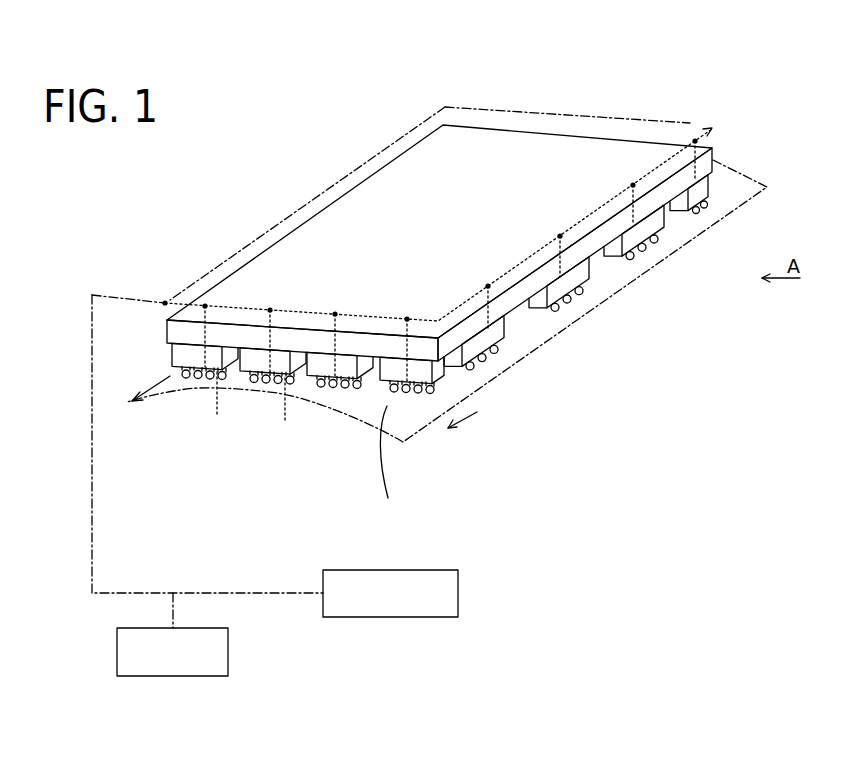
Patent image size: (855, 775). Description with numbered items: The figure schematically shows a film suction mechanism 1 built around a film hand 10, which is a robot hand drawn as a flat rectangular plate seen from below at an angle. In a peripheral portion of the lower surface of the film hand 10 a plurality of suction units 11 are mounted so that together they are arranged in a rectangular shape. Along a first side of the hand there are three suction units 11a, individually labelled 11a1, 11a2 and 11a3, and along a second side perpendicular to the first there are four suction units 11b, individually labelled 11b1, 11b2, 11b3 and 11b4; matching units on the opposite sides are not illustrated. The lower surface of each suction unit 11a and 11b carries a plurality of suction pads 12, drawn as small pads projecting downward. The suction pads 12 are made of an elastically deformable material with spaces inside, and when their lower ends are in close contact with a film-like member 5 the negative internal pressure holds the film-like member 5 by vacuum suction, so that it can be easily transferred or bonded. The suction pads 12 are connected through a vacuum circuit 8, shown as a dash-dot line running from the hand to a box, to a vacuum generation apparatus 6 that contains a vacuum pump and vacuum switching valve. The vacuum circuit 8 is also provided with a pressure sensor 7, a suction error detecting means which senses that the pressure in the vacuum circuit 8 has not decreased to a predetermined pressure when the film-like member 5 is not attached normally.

The film suction mechanism 1 is at (607, 116).
The film-like member 5 is at (388, 465).
The vacuum generation apparatus 6 is at (460, 598).
The pressure sensor 7 is at (163, 680).
The vacuum circuit 8 is at (688, 124).
The film hand 10 is at (235, 298).
The suction units 11 is at (454, 355).
The suction units along first side 11a is at (592, 311).
The suction unit 11a1 is at (488, 352).
The suction unit 11a2 is at (572, 292).
The suction unit 11a3 is at (667, 248).
The suction units along second side 11b is at (474, 355).
The suction unit 11b1 is at (203, 379).
The suction unit 11b2 is at (273, 384).
The suction unit 11b3 is at (337, 389).
The suction unit 11b4 is at (592, 334).
The suction pads 12 is at (616, 292).